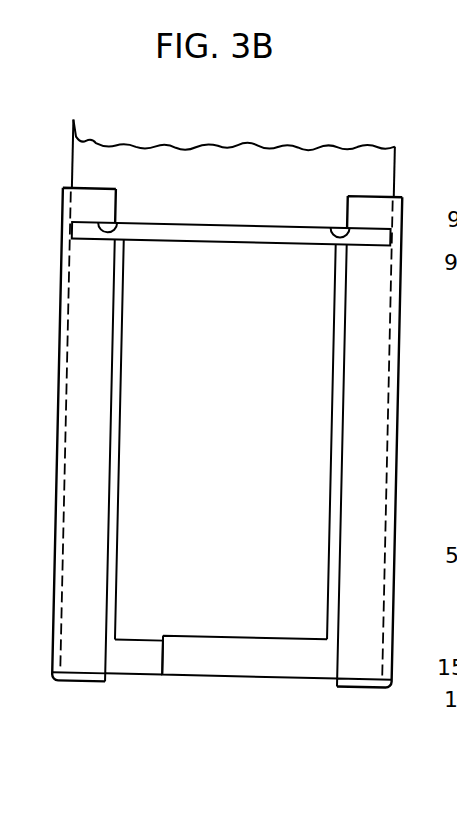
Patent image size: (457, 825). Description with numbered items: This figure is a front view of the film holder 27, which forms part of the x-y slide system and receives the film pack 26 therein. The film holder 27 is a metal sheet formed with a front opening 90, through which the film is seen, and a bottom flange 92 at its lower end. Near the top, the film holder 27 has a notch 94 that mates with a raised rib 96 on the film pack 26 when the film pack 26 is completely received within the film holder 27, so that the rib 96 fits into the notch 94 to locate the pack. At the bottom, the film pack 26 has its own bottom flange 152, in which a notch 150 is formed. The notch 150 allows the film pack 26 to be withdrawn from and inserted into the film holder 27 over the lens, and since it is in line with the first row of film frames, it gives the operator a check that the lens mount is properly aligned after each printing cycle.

The film pack 26 is at (169, 148).
The film holder 27 is at (397, 464).
The front opening 90 is at (340, 414).
The bottom flange 92 is at (89, 686).
The notch 94 is at (116, 225).
The raised rib 96 is at (223, 232).
The notch 150 is at (144, 662).
The bottom flange 152 is at (246, 662).